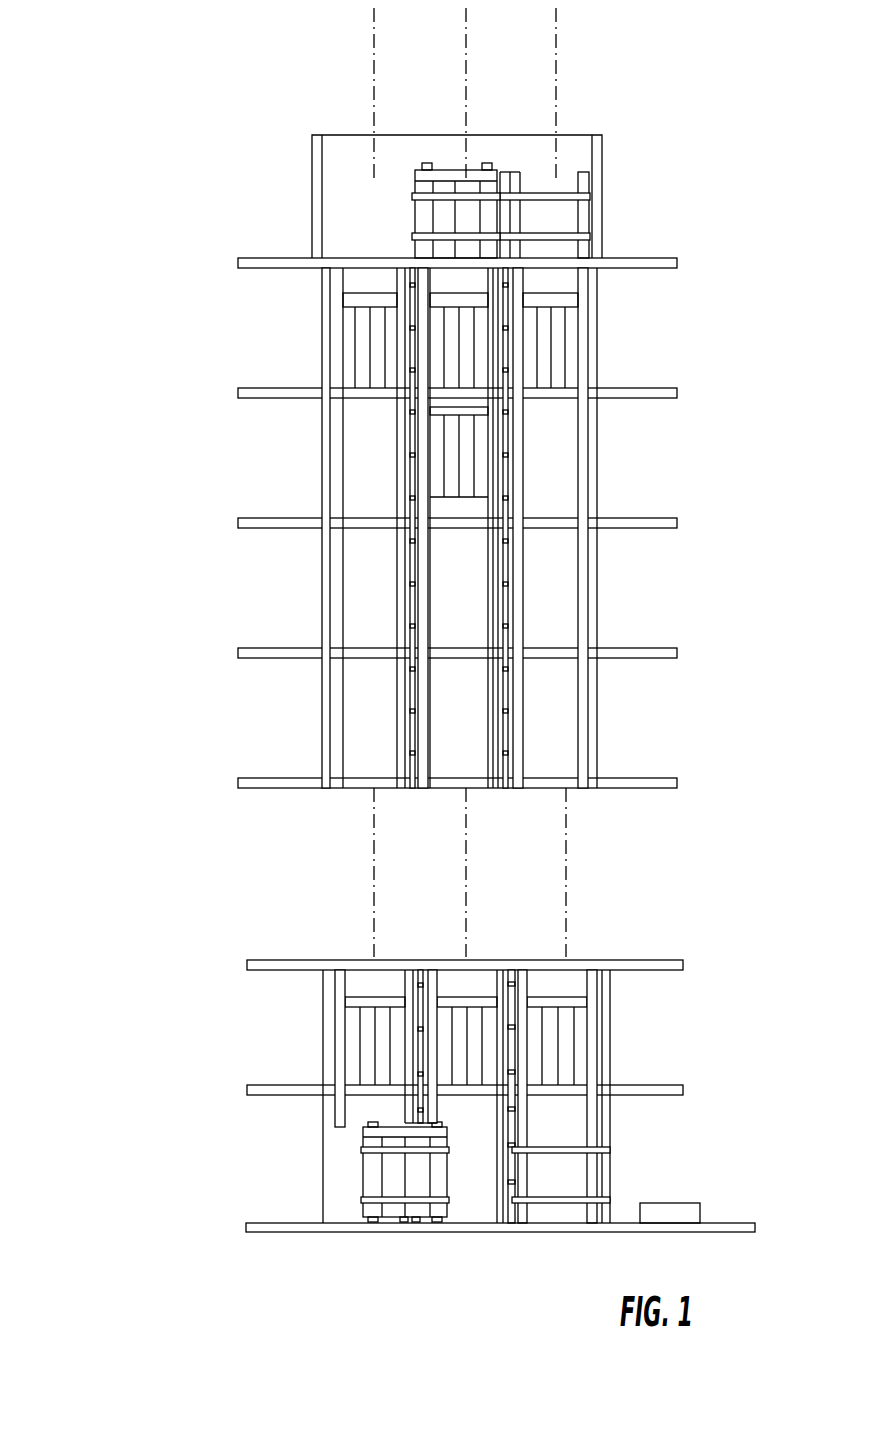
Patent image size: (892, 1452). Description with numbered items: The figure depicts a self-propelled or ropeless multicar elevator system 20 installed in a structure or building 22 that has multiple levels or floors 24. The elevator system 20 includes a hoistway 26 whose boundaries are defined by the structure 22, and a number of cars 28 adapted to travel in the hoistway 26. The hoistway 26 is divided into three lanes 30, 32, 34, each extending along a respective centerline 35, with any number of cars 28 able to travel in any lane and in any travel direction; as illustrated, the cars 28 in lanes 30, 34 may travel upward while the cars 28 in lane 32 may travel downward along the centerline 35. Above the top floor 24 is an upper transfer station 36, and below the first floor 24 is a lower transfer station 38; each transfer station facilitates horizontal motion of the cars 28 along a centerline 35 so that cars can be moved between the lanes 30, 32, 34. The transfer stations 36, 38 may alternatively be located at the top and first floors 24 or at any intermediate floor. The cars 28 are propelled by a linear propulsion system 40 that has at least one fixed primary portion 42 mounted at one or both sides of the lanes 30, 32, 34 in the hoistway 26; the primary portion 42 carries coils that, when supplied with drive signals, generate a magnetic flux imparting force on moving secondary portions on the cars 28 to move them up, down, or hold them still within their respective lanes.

The elevator system 20 is at (435, 650).
The structure or building 22 is at (300, 157).
The levels or floors 24 is at (284, 518).
The hoistway 26 is at (547, 555).
The car 28 is at (470, 187).
The first lane 30 is at (382, 627).
The second lane 32 is at (474, 627).
The third lane 34 is at (563, 627).
The centerline 35 is at (466, 88).
The upper transfer station 36 is at (378, 208).
The lower transfer station 38 is at (345, 1168).
The linear propulsion system 40 is at (440, 1245).
The primary portion 42 is at (437, 982).